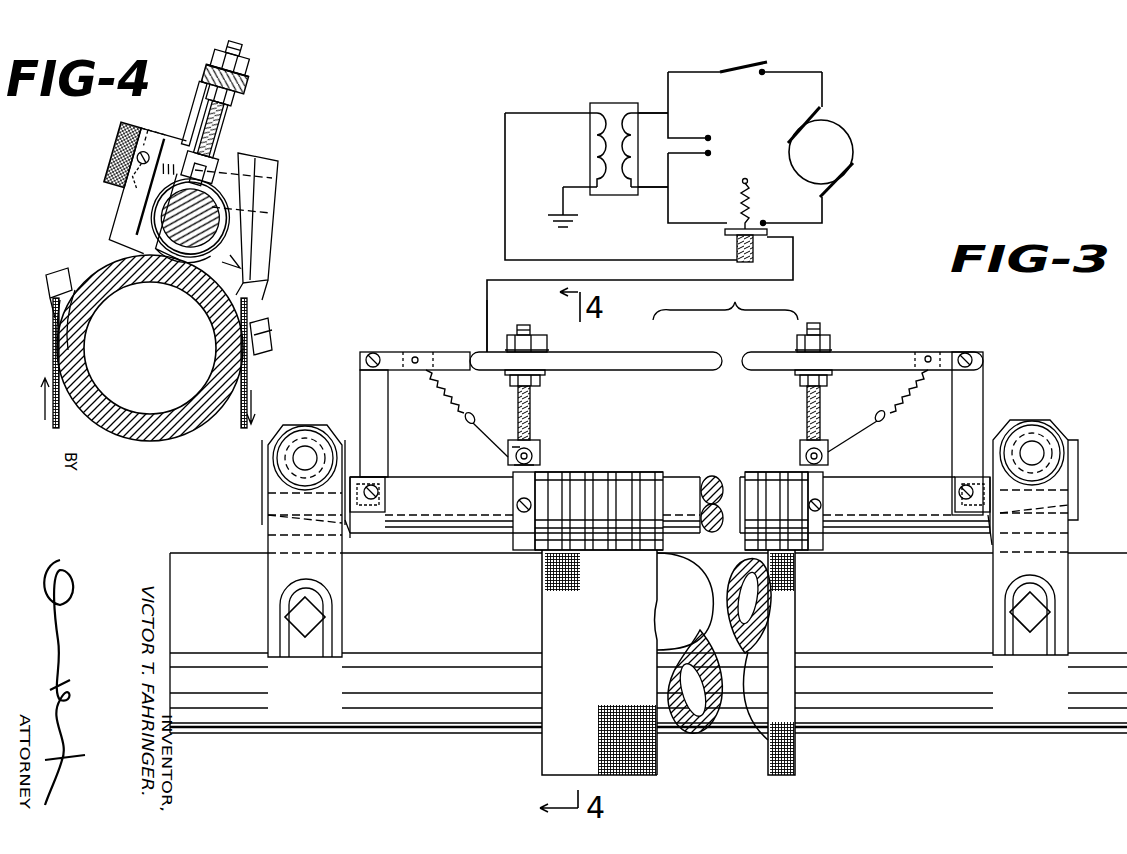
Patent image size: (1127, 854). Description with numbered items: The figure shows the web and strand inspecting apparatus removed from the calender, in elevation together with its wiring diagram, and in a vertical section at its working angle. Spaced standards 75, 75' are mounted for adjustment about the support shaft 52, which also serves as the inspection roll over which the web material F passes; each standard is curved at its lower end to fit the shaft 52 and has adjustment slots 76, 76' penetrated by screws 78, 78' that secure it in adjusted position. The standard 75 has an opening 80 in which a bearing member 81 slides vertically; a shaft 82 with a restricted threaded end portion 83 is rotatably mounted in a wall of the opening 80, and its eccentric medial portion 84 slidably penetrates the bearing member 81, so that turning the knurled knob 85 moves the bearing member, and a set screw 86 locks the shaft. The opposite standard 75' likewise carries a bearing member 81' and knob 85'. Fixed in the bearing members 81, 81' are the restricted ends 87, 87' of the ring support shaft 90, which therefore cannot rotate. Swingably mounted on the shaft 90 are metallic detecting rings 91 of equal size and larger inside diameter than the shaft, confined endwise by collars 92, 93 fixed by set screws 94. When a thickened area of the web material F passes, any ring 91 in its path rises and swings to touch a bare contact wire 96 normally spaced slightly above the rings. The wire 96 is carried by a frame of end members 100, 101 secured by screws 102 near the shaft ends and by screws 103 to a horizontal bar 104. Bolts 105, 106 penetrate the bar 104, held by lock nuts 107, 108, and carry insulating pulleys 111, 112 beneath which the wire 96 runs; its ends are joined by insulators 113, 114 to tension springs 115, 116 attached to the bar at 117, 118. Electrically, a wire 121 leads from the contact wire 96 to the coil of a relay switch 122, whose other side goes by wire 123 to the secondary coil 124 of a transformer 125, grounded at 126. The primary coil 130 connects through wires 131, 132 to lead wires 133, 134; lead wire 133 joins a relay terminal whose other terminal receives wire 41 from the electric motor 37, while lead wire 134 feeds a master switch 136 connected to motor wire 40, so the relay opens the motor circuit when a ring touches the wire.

In FIG. 3, the electric motor 37 is at (852, 150).
In FIG. 3, the wire 40 is at (824, 88).
In FIG. 3, the wire 41 is at (824, 212).
In FIG. 4, the support shaft 52 is at (160, 441).
In FIG. 3, the support shaft 52 is at (448, 735).
In FIG. 4, the standard 75 is at (259, 277).
In FIG. 3, the standard 75 is at (320, 541).
In FIG. 3, the standard 75' is at (1046, 537).
In FIG. 3, the adjustment slots 76 is at (301, 612).
In FIG. 3, the adjustment slots 76' is at (1052, 615).
In FIG. 4, the screws 78 is at (160, 306).
In FIG. 3, the screws 78 is at (327, 617).
In FIG. 3, the screws 78' is at (1055, 612).
In FIG. 4, the opening 80 is at (228, 266).
In FIG. 4, the bearing member 81 is at (258, 207).
In FIG. 3, the bearing member 81 is at (288, 496).
In FIG. 3, the bearing member 81' is at (1053, 496).
In FIG. 4, the shaft 82 is at (155, 132).
In FIG. 4, the restricted threaded end portion 83 is at (271, 177).
In FIG. 4, the eccentric medial portion 84 is at (259, 212).
In FIG. 4, the knurled knob 85 is at (107, 154).
In FIG. 3, the knurled knob 85 is at (305, 445).
In FIG. 3, the knurled knob 85' is at (1032, 441).
In FIG. 4, the set screw 86 is at (137, 175).
In FIG. 3, the restricted end 87 is at (359, 535).
In FIG. 3, the restricted end 87' is at (980, 533).
In FIG. 4, the ring support shaft 90 is at (158, 229).
In FIG. 3, the ring support shaft 90 is at (450, 533).
In FIG. 4, the metallic detecting rings 91 is at (230, 224).
In FIG. 3, the metallic detecting rings 91 is at (560, 472).
In FIG. 4, the collar 92 is at (158, 240).
In FIG. 3, the collar 92 is at (513, 490).
In FIG. 3, the collar 93 is at (825, 494).
In FIG. 3, the set screws 94 is at (513, 516).
In FIG. 3, the contact wire 96 is at (592, 472).
In FIG. 4, the end member 100 is at (192, 132).
In FIG. 3, the end member 100 is at (388, 436).
In FIG. 3, the end member 101 is at (976, 400).
In FIG. 3, the screws 102 is at (384, 493).
In FIG. 4, the screws 103 is at (208, 80).
In FIG. 3, the screws 103 is at (376, 354).
In FIG. 4, the horizontally disposed bar 104 is at (253, 80).
In FIG. 3, the horizontally disposed bar 104 is at (664, 358).
In FIG. 4, the bolt 105 is at (236, 113).
In FIG. 3, the bolt 105 is at (531, 420).
In FIG. 3, the bolt 106 is at (806, 420).
In FIG. 4, the lock nut 107 is at (207, 100).
In FIG. 3, the lock nut 107 is at (540, 380).
In FIG. 4, the lock nut 108 is at (249, 62).
In FIG. 3, the lock nut 108 is at (538, 342).
In FIG. 4, the pulley 111 is at (184, 166).
In FIG. 3, the pulley 111 is at (541, 453).
In FIG. 3, the pulley 112 is at (828, 460).
In FIG. 3, the insulator 113 is at (471, 426).
In FIG. 3, the insulator 114 is at (876, 420).
In FIG. 3, the tension spring 115 is at (444, 400).
In FIG. 3, the tension spring 116 is at (900, 396).
In FIG. 3, the spring connection 117 is at (416, 357).
In FIG. 3, the spring connection 118 is at (928, 356).
In FIG. 3, the wire 121 is at (491, 306).
In FIG. 3, the relay switch 122 is at (753, 254).
In FIG. 3, the wire 123 is at (614, 260).
In FIG. 3, the secondary coil 124 is at (594, 148).
In FIG. 3, the transformer 125 is at (600, 103).
In FIG. 3, the ground 126 is at (566, 202).
In FIG. 3, the primary coil 130 is at (634, 148).
In FIG. 3, the wire 131 is at (655, 106).
In FIG. 3, the wire 132 is at (651, 190).
In FIG. 3, the lead wire 133 is at (670, 186).
In FIG. 3, the lead wire 134 is at (670, 106).
In FIG. 3, the master switch 136 is at (760, 70).
In FIG. 4, the web material F is at (53, 427).
In FIG. 3, the web material F is at (657, 620).